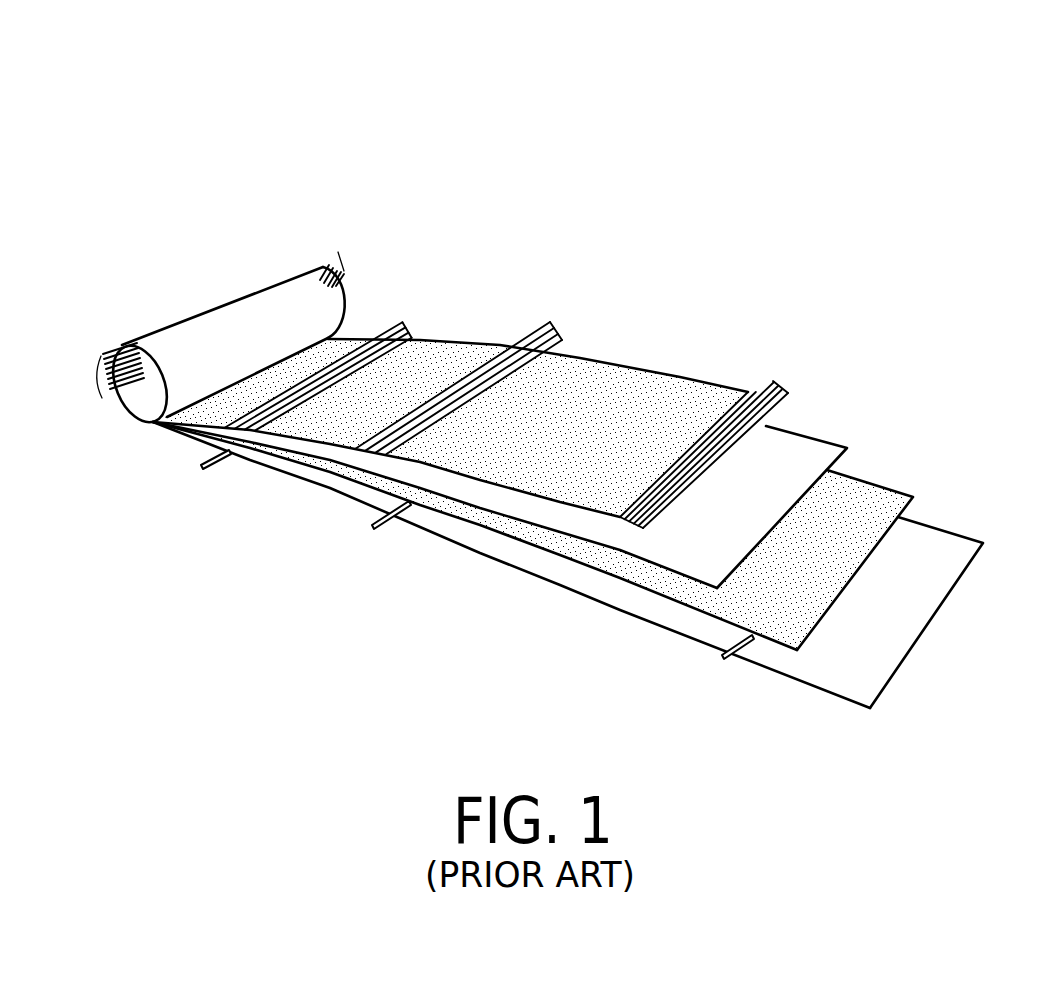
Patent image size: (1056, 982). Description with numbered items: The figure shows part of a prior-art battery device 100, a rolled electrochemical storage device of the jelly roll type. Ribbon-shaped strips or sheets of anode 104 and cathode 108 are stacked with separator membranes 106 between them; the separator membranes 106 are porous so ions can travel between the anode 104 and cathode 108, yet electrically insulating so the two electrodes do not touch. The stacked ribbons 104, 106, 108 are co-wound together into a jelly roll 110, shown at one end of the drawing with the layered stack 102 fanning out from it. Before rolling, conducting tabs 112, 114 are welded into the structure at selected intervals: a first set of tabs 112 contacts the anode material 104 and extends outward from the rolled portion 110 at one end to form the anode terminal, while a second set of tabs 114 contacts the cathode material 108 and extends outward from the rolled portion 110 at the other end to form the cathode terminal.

The battery device 100 is at (112, 76).
The laminated sheet assembly 102 is at (754, 181).
The anode 104 is at (700, 381).
The separator membranes 106 is at (808, 432).
The cathode 108 is at (867, 474).
The jelly roll 110 is at (204, 304).
The tabs 112 is at (342, 288).
The tabs 114 is at (103, 366).